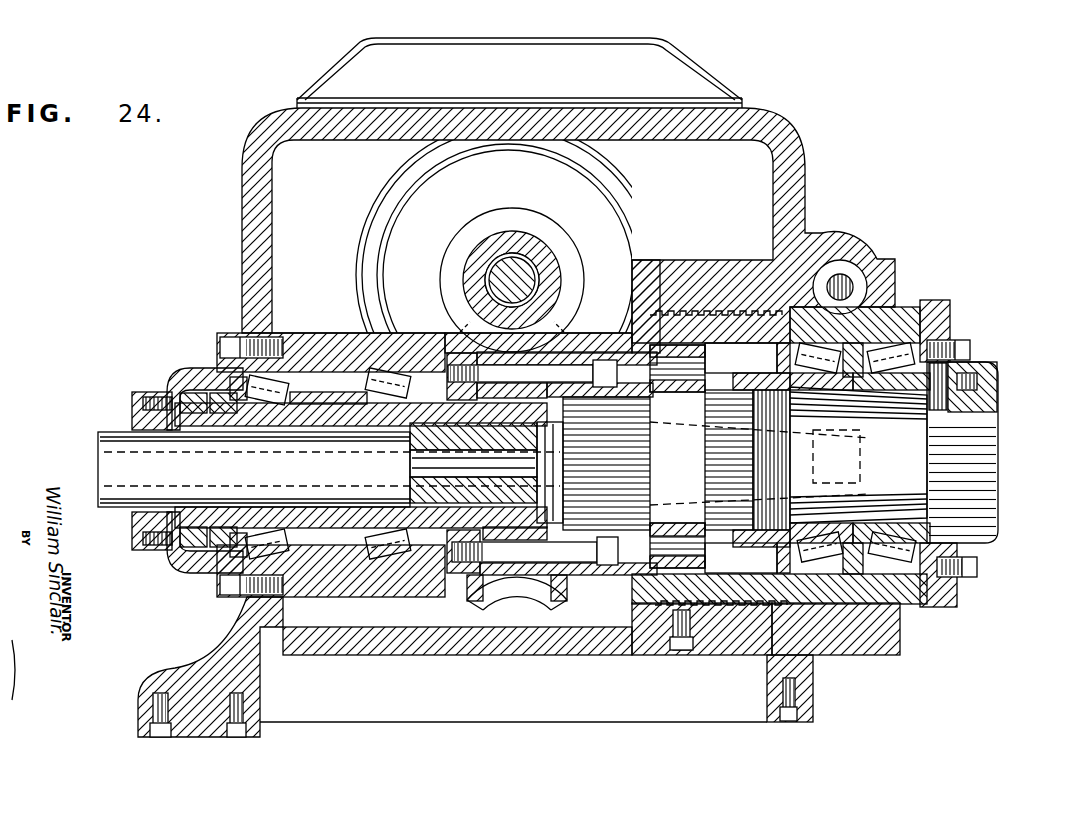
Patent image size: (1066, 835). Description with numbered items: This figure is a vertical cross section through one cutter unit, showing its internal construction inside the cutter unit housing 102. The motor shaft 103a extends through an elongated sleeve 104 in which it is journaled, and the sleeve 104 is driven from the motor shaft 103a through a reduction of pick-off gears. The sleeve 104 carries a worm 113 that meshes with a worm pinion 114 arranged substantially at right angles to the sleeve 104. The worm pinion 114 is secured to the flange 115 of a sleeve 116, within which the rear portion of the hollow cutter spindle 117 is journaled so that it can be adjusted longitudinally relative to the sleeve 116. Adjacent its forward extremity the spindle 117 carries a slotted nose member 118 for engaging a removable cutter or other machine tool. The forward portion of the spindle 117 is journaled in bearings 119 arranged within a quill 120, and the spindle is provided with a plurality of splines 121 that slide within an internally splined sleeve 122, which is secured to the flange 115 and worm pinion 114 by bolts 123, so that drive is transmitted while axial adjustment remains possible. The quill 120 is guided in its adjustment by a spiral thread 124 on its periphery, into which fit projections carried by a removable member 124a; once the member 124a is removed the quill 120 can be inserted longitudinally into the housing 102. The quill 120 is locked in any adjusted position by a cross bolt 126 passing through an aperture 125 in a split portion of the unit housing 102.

The cutter unit housing 102 is at (790, 187).
The motor shaft 103a is at (533, 260).
The elongated sleeve 104 is at (520, 280).
The worm 113 is at (520, 220).
The worm pinion 114 is at (563, 333).
The flange 115 is at (442, 322).
The sleeve 116 is at (325, 410).
The cutter spindle 117 is at (127, 442).
The slotted nose member 118 is at (998, 525).
The bearings 119 is at (925, 598).
The quill 120 is at (907, 603).
The splines 121 is at (710, 407).
The internally splined sleeve 122 is at (605, 360).
The bolts 123 is at (585, 552).
The spiral thread 124 is at (867, 327).
The removable member 124a is at (723, 645).
The aperture 125 is at (852, 277).
The cross bolt 126 is at (842, 280).